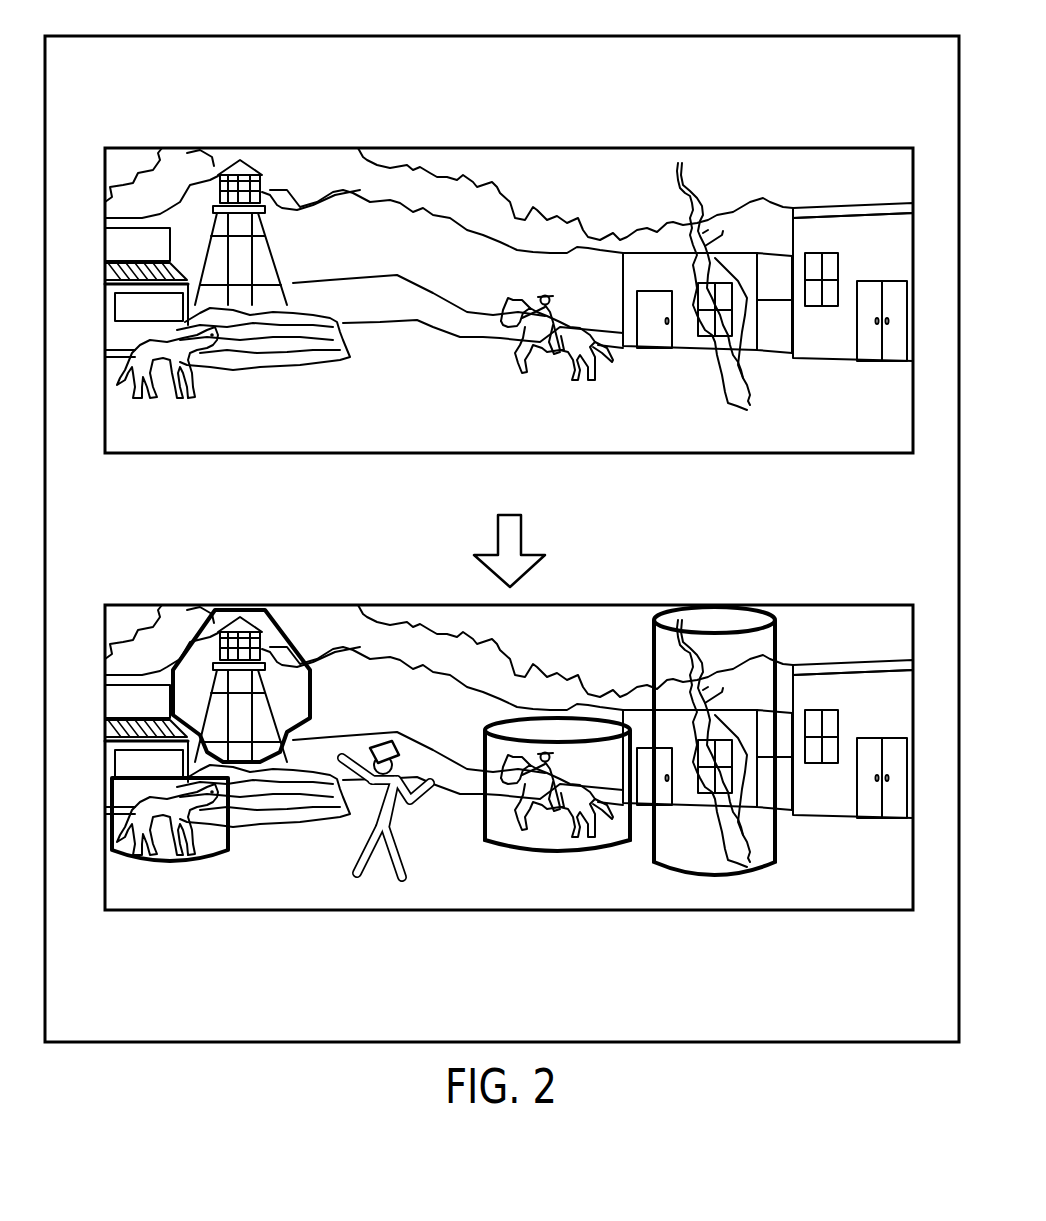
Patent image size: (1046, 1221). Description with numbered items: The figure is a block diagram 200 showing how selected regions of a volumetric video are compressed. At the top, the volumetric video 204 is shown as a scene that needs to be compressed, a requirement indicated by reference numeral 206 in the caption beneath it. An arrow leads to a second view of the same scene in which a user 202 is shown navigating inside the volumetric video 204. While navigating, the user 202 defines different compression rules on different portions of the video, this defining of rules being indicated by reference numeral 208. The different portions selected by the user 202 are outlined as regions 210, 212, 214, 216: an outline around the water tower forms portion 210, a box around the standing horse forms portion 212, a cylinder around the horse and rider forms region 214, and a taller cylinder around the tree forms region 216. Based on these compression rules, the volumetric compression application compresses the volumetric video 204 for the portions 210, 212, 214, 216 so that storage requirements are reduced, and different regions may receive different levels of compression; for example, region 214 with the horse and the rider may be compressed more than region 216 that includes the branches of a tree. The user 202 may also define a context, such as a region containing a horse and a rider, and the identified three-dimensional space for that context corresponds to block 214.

The block diagram 200 is at (136, 36).
The user 202 is at (383, 798).
The volumetric video 204 is at (136, 148).
The volumetric video that needs to be compressed 206 is at (742, 484).
The user-defined compression rules on different portions 208 is at (797, 972).
The portion of the volumetric video 210 is at (310, 696).
The portion of the volumetric video 212 is at (232, 841).
The region with the horse and the rider 214 is at (556, 852).
The region that includes the branches of a tree 216 is at (775, 646).